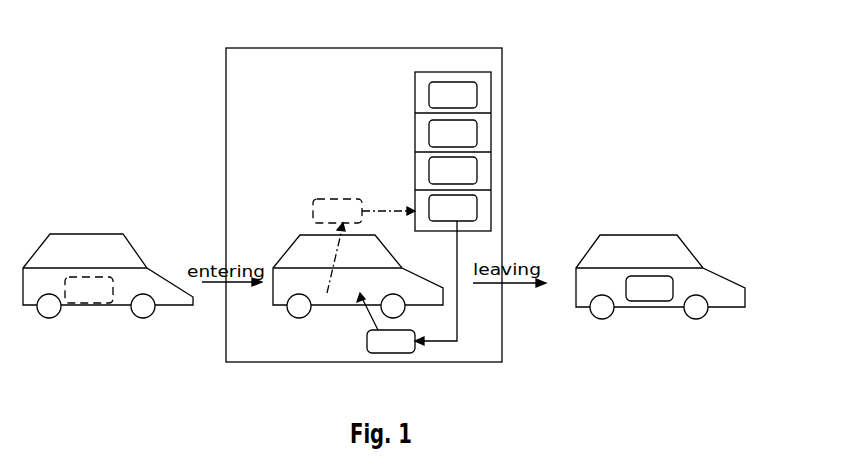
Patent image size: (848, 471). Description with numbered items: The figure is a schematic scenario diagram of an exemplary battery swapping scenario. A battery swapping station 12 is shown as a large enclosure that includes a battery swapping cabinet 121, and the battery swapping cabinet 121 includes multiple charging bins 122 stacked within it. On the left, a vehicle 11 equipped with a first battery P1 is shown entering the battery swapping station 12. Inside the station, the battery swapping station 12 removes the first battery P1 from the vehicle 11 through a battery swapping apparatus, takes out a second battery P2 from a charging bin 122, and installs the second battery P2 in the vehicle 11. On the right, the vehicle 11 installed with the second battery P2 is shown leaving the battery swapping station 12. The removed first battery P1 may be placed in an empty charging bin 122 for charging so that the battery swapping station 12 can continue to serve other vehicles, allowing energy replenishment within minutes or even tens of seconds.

The vehicle 11 is at (125, 233).
The battery swapping station 12 is at (412, 47).
The battery swapping cabinet 121 is at (453, 71).
The charging bin 122 is at (485, 94).
The first battery P1 is at (88, 305).
The second battery P2 is at (403, 353).